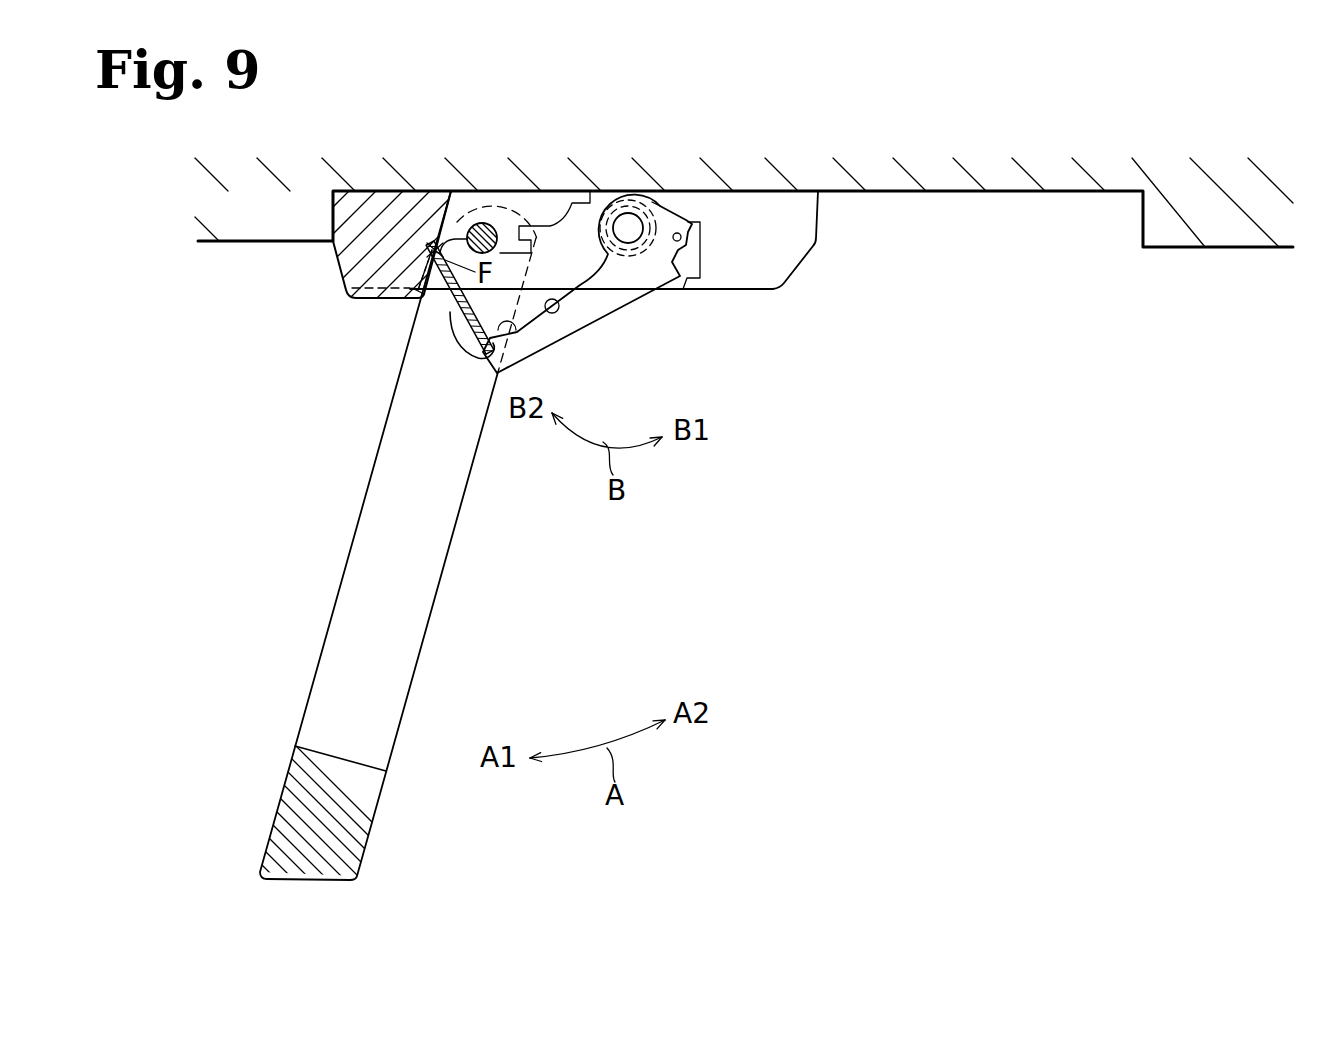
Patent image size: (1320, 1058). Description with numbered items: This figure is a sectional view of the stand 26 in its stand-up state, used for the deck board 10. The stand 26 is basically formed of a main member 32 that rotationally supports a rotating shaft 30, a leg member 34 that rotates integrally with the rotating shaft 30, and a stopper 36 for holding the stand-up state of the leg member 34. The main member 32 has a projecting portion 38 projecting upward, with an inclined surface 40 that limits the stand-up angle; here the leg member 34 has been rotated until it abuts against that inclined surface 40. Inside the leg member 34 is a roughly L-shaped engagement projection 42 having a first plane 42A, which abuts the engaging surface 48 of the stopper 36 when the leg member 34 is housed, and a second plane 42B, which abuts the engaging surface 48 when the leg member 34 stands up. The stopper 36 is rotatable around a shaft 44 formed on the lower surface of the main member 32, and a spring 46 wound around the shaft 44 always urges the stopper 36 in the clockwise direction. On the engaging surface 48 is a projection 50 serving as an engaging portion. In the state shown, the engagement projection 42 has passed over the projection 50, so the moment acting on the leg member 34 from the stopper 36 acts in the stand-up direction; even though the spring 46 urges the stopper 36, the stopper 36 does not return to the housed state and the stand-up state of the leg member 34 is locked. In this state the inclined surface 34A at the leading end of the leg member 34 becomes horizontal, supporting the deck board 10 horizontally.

The deck board 10 is at (1010, 183).
The stand 26 is at (790, 342).
The rotating shaft 30 is at (483, 225).
The main member 32 is at (765, 220).
The leg member 34 is at (418, 608).
The inclined surface 34A is at (331, 884).
The stopper 36 is at (603, 298).
The projecting portion 38 is at (372, 191).
The inclined surface 40 is at (415, 292).
The engagement projection 42 is at (450, 312).
The first plane 42A is at (450, 342).
The second plane 42B is at (468, 355).
The shaft 44 is at (622, 213).
The spring 46 is at (633, 205).
The engaging surface 48 is at (553, 313).
The projection 50 is at (513, 328).